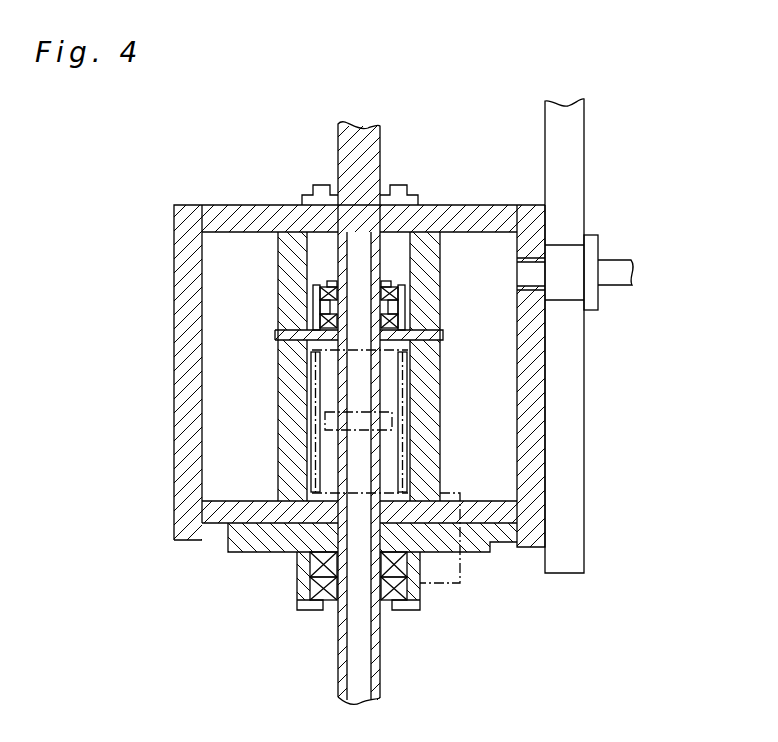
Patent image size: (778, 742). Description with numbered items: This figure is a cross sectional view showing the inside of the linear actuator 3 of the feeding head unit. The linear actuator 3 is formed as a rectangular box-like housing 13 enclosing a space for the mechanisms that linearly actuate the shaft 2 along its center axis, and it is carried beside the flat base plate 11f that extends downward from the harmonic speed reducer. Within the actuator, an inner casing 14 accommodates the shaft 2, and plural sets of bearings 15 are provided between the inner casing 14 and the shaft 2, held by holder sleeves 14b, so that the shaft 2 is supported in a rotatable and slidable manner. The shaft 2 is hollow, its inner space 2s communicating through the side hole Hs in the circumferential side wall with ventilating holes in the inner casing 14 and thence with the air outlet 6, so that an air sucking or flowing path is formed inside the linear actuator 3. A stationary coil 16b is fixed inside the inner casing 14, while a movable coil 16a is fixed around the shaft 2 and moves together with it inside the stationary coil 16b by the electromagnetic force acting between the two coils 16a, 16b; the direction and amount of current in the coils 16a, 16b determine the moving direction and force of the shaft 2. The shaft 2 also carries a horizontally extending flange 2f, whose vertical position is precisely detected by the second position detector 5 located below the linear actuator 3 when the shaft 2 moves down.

The shaft 2 is at (380, 672).
The flange 2f is at (277, 332).
The inner space 2s is at (343, 395).
The linear actuator 3 is at (504, 76).
The second position detector 5 is at (438, 572).
The air outlet 6 is at (567, 290).
The base plate 11f is at (573, 183).
The housing 13 is at (495, 428).
The inner casing 14 is at (438, 373).
The holder sleeve 14b is at (310, 253).
The bearings 15 is at (318, 318).
The movable coil 16a is at (310, 413).
The stationary coil 16b is at (310, 453).
The side hole Hs is at (322, 238).